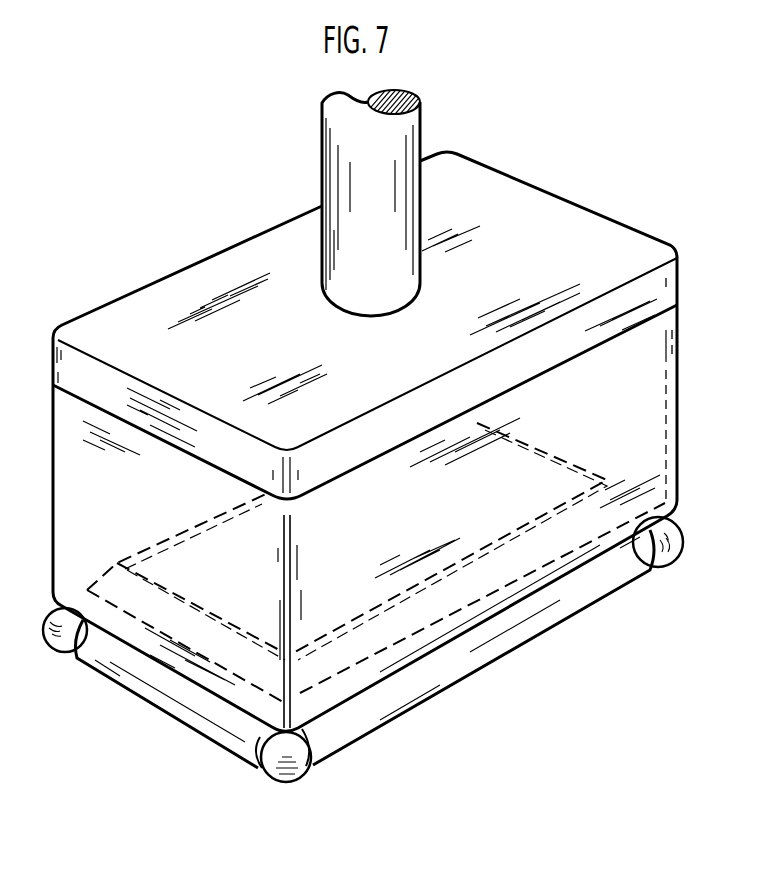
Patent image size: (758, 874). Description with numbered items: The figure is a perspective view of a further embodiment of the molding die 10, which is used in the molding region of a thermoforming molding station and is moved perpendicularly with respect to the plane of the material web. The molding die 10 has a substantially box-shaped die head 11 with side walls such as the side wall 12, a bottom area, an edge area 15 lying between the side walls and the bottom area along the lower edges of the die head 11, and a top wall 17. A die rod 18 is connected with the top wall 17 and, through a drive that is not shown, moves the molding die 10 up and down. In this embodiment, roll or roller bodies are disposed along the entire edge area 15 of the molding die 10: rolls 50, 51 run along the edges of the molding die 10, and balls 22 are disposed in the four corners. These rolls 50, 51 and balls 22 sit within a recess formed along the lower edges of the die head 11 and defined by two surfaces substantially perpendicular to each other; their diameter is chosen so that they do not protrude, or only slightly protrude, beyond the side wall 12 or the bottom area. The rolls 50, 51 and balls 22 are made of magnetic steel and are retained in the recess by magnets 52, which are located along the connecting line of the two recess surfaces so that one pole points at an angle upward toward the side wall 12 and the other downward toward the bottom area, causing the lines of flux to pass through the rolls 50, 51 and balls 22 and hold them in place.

The molding die 10 is at (250, 208).
The die head 11 is at (681, 340).
The side wall 12 is at (657, 423).
The edge area 15 is at (550, 640).
The top wall 17 is at (637, 243).
The die rod 18 is at (397, 134).
The balls 22 is at (50, 636).
The roll 50 is at (477, 650).
The roll 51 is at (182, 698).
The magnets 52 is at (607, 506).